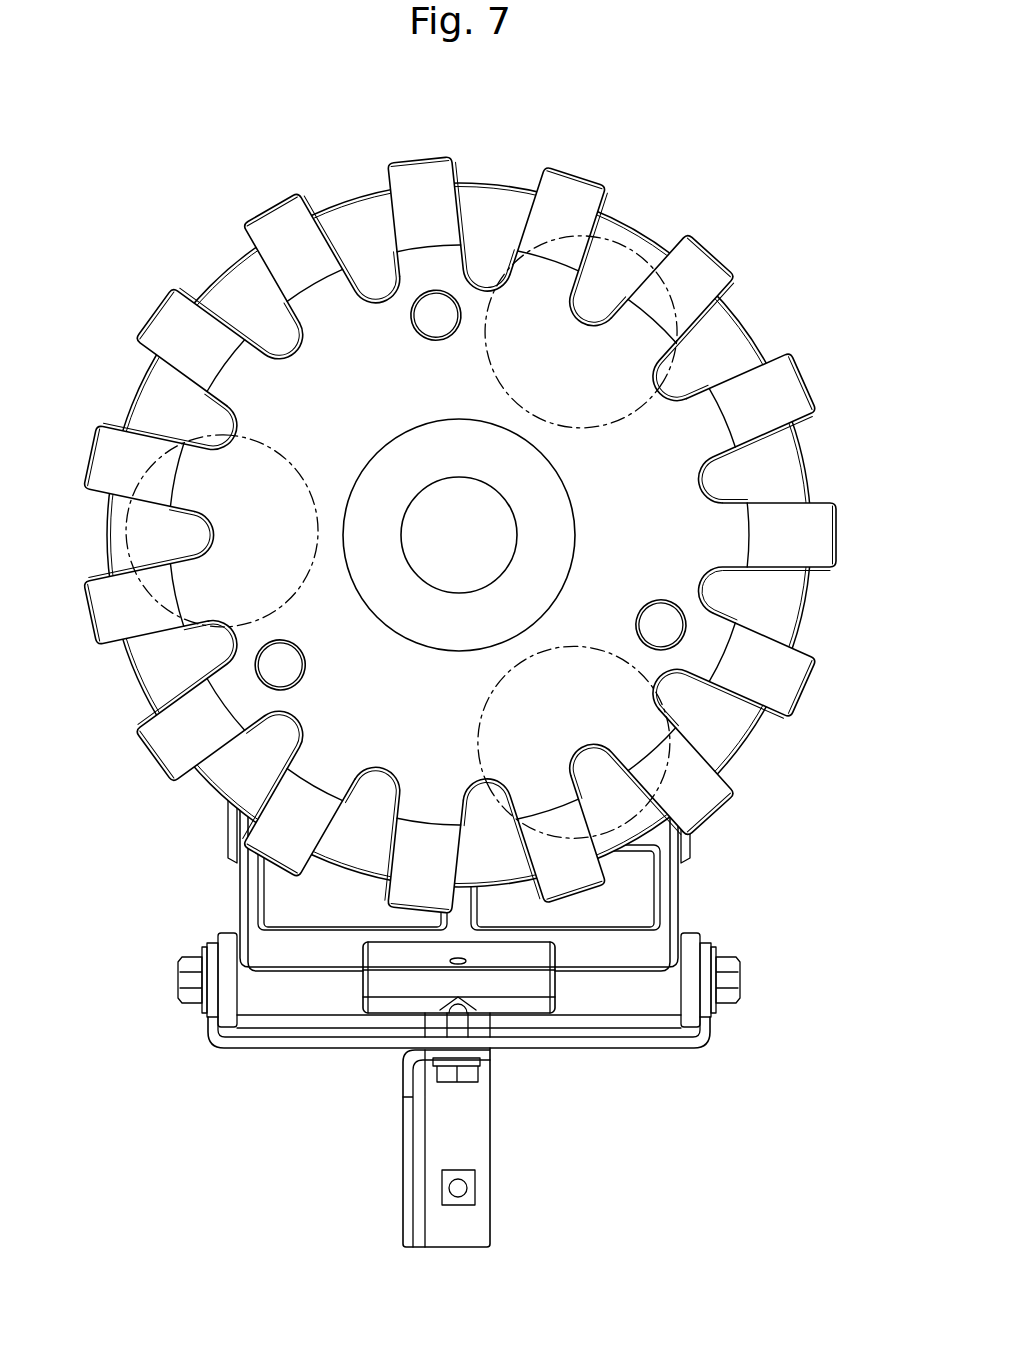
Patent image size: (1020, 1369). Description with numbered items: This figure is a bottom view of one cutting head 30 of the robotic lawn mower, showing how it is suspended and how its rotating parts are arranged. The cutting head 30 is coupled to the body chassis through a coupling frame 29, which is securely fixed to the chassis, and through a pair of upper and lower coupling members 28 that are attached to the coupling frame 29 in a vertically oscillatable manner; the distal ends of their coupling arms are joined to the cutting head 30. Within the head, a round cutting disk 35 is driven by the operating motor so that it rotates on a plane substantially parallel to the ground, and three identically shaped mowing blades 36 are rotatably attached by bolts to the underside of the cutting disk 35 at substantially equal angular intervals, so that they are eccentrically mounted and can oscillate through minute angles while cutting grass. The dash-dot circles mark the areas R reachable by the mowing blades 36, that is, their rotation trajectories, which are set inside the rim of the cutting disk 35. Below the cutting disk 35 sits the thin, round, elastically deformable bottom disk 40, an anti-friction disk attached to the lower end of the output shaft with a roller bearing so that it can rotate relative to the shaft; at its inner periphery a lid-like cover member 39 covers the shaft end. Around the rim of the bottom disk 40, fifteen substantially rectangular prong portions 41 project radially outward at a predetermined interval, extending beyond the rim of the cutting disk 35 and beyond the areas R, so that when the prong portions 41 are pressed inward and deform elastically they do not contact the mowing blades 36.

The coupling member 28 is at (240, 908).
The coupling frame 29 is at (712, 1030).
The cutting head 30 is at (462, 526).
The cutting disk 35 is at (806, 452).
The mowing blade 36 is at (611, 288).
The cover member 39 is at (577, 537).
The bottom disk 40 is at (208, 288).
The prong portion 41 is at (276, 212).
The area reachable by the mowing blades R is at (672, 302).